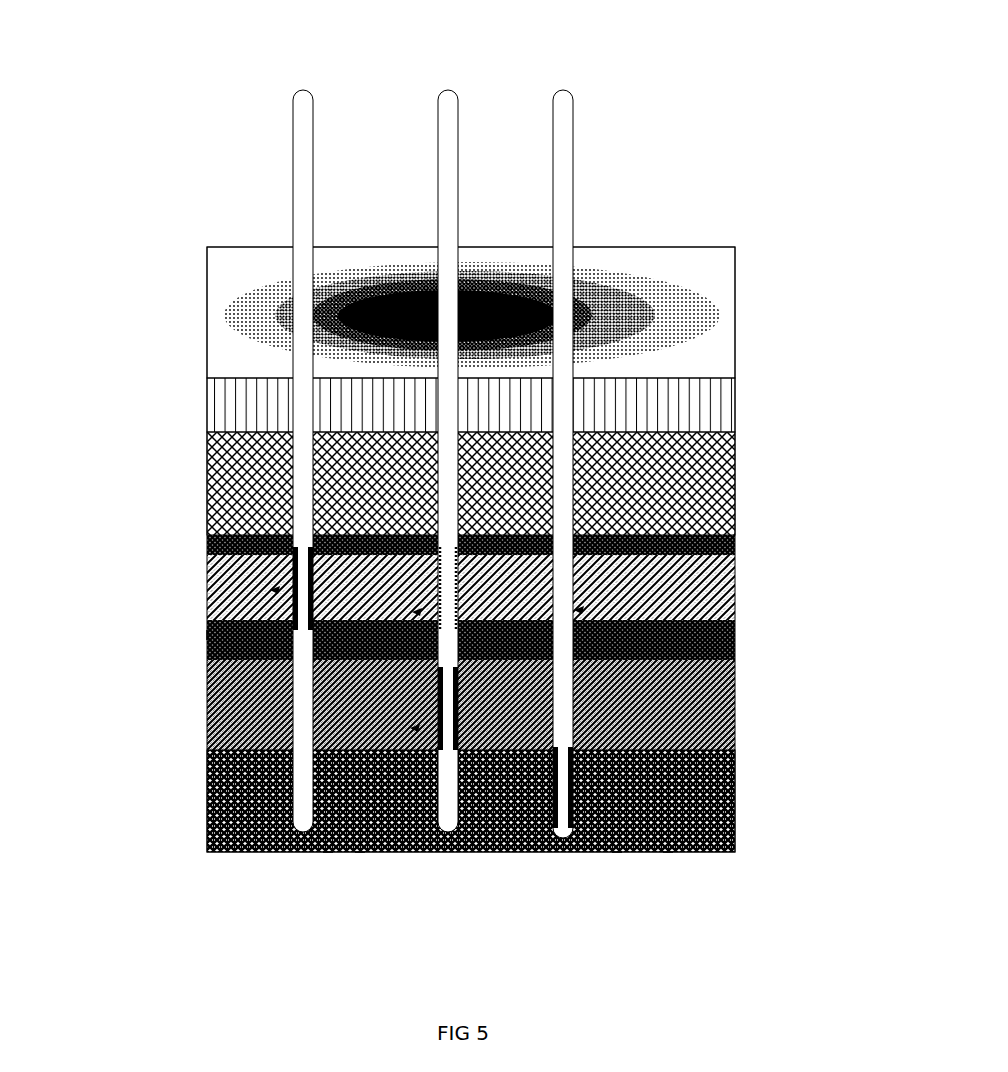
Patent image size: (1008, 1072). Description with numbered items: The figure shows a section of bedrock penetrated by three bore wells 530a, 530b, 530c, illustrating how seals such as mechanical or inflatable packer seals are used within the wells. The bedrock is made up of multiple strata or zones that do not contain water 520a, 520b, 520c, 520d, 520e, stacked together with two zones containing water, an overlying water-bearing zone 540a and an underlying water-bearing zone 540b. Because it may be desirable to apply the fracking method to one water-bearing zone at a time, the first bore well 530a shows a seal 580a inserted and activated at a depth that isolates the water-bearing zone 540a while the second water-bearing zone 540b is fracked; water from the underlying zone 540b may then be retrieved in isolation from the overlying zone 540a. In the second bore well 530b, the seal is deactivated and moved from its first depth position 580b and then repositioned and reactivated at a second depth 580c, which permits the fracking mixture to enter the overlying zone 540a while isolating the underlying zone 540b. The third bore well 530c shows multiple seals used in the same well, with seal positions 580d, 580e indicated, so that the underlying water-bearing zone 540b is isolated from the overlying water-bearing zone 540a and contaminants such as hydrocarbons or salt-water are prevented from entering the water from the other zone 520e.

The stratum not containing water 520a is at (757, 316).
The stratum not containing water 520b is at (761, 406).
The stratum not containing water 520c is at (748, 472).
The stratum not containing water 520d is at (737, 638).
The stratum not containing water 520e is at (745, 785).
The bore well 530a is at (303, 78).
The bore well 530b is at (448, 78).
The bore well 530c is at (564, 78).
The water-bearing zone 540a is at (205, 588).
The water-bearing zone 540b is at (737, 705).
The seal 580a is at (205, 635).
The first depth position 580b is at (328, 852).
The second depth 580c is at (360, 852).
The fourth interface region 580d is at (668, 853).
The fifth interface region 580e is at (617, 853).